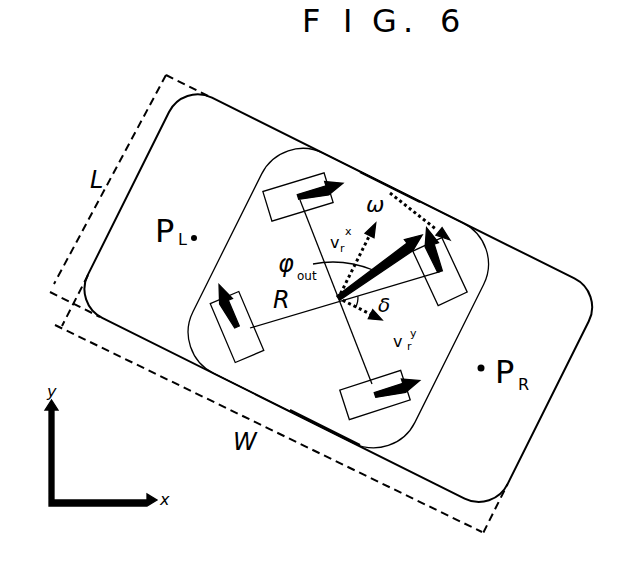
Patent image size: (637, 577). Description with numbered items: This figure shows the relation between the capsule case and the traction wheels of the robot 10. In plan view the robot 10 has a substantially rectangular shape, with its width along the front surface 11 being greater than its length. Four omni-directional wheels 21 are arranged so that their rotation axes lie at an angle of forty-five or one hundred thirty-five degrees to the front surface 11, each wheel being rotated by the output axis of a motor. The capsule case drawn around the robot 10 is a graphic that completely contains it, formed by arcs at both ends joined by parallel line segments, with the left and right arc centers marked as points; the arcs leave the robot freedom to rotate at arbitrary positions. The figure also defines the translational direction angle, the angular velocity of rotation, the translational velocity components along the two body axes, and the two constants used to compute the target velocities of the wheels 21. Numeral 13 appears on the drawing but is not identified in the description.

The robot 10 is at (400, 553).
The front surface 11 is at (388, 187).
The front/bottom surface of body 13 is at (325, 420).
The omni-directional wheel 21 is at (263, 216).